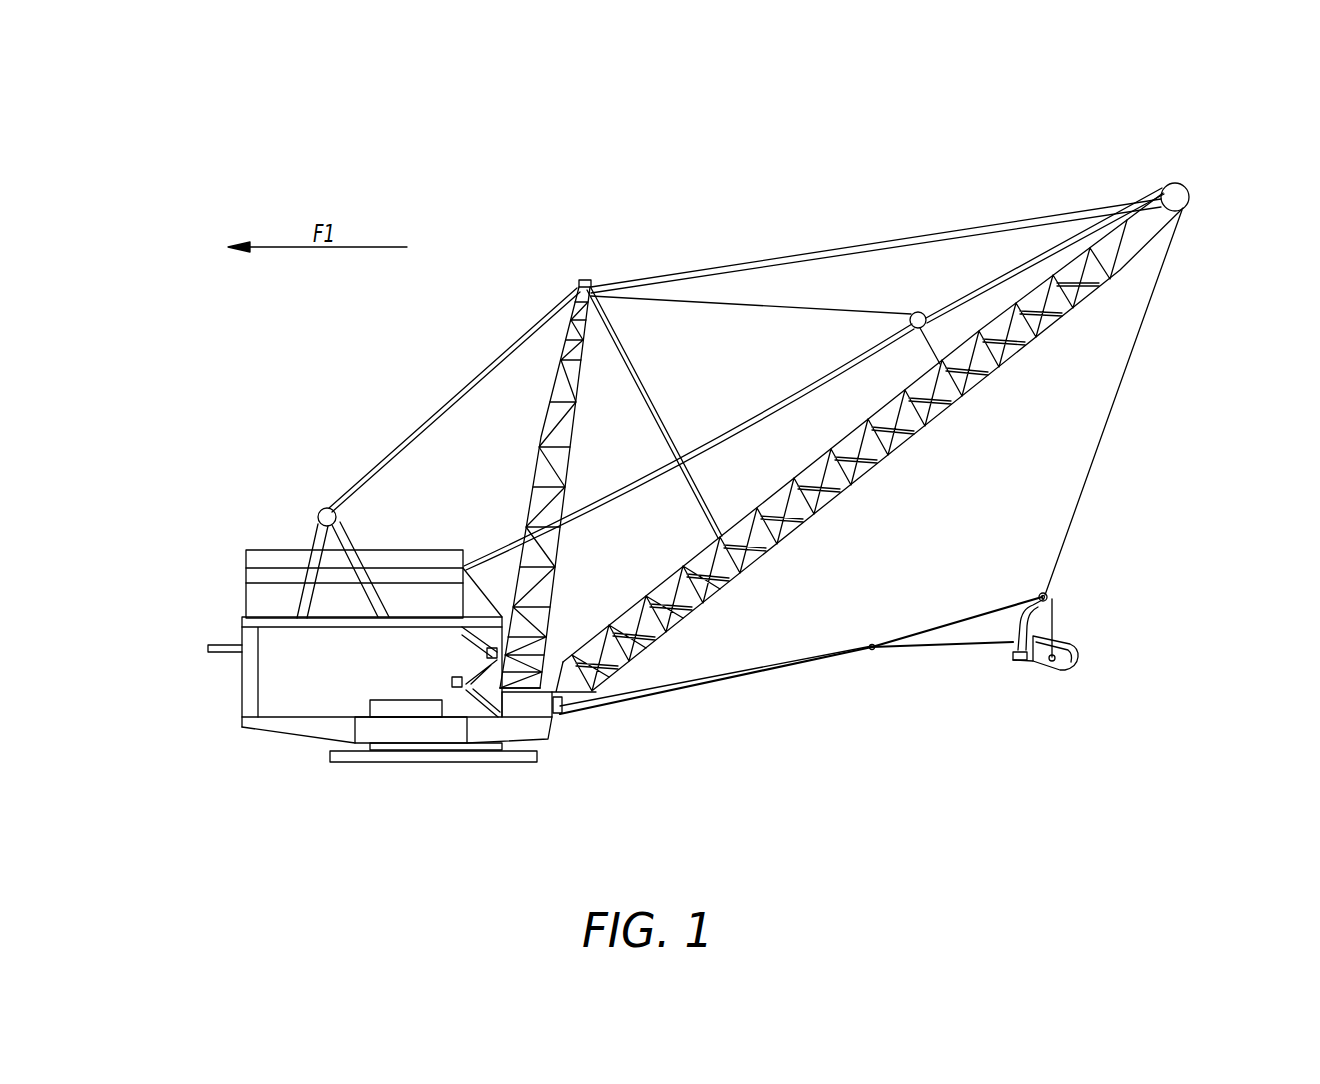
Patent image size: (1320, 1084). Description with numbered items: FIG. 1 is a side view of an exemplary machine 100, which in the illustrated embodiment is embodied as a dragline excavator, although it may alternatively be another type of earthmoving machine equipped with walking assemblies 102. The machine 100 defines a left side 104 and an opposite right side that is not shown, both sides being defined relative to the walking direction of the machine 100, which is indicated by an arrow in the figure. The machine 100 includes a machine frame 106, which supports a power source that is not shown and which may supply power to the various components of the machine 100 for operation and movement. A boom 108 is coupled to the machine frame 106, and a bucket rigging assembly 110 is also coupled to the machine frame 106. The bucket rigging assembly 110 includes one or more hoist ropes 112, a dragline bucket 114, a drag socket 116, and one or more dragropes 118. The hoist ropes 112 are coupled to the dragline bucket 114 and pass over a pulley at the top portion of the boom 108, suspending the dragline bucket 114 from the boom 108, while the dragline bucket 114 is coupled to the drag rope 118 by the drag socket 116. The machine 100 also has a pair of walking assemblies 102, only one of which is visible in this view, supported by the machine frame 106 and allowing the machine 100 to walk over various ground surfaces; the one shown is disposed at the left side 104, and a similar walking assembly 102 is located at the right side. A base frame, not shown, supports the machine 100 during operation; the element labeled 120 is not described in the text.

The machine 100 is at (1216, 102).
The walking assembly 102 is at (560, 747).
The left side 104 is at (270, 750).
The machine frame 106 is at (242, 689).
The boom 108 is at (1012, 340).
The bucket rigging assembly 110 is at (1163, 400).
The hoist rope 112 is at (807, 382).
The dragline bucket 114 is at (1070, 640).
The drag socket 116 is at (872, 650).
The dragrope 118 is at (765, 668).
The tub 120 is at (438, 753).